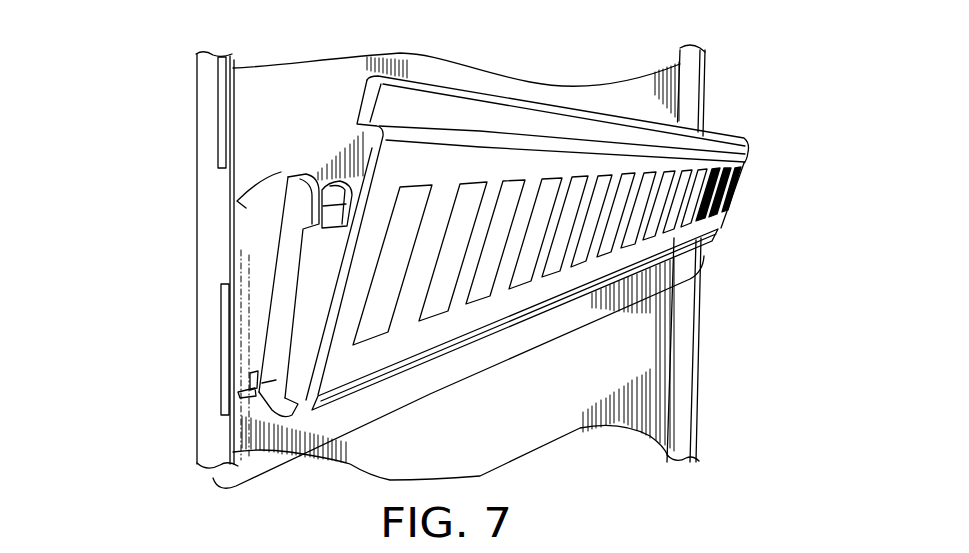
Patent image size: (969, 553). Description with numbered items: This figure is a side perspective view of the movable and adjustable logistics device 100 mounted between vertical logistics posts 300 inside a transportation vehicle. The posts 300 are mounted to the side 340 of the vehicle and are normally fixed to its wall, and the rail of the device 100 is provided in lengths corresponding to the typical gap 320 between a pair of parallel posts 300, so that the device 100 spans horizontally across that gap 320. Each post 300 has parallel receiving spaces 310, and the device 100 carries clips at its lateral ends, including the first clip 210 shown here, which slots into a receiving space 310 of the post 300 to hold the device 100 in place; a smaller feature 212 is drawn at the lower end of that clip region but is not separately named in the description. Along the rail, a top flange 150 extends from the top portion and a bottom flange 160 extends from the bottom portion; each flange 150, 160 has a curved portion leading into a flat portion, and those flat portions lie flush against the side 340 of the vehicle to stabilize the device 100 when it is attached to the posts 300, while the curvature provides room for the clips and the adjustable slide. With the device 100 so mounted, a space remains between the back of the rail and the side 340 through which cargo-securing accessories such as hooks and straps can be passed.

The movable and adjustable logistics device 100 is at (605, 100).
The top flange 150 is at (420, 110).
The bottom flange 160 is at (421, 390).
The first clip 210 is at (332, 292).
The latch 212 is at (257, 357).
The vertical logistics posts 300 is at (206, 436).
The receiving spaces 310 is at (214, 104).
The gap between parallel vertical logistics posts 320 is at (540, 340).
The side of a transportation vehicle 340 is at (715, 357).